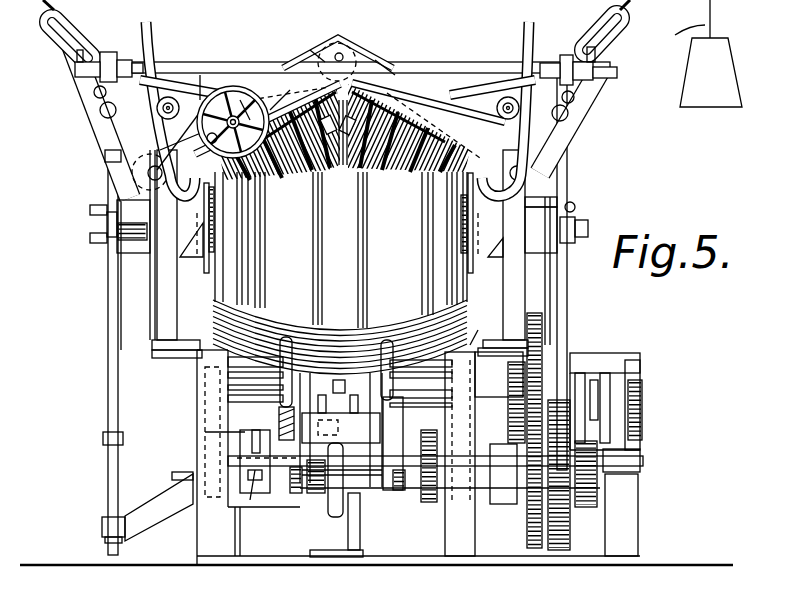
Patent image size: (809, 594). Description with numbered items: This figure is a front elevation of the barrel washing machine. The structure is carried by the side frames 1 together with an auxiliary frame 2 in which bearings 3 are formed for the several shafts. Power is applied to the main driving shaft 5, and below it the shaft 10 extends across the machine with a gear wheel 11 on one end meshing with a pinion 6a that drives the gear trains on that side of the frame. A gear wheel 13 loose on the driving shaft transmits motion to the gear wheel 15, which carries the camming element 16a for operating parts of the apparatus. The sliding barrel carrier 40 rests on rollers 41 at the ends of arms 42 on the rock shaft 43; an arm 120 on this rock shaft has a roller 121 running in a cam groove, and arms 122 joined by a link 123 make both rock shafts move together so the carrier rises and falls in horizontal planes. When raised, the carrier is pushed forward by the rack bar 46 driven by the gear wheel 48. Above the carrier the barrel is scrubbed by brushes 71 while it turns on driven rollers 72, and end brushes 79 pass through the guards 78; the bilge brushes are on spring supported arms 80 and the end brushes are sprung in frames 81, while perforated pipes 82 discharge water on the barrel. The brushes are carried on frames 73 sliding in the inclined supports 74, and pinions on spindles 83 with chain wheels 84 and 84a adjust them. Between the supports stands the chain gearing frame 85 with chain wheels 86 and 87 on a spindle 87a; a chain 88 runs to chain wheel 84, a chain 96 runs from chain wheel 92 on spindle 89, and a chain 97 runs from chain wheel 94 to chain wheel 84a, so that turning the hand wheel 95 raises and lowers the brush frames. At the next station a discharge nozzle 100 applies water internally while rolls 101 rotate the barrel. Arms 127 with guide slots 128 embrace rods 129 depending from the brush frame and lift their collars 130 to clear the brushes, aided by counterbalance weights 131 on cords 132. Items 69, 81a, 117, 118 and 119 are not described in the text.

The side frame 1 is at (376, 457).
The auxiliary frame 2 is at (622, 520).
The bearing 3 is at (615, 462).
The main driving shaft 5 is at (500, 397).
The pinion 6a is at (205, 392).
The shaft 10 is at (237, 458).
The gear wheel 11 is at (205, 432).
The gear wheel 13 is at (555, 345).
The gear wheel 15 is at (530, 525).
The camming element 16a is at (612, 400).
The sliding barrel carrier 40 is at (303, 412).
The roller 41 is at (308, 500).
The arm 42 is at (280, 495).
The rock shaft 43 is at (350, 520).
The arm or bar 46 is at (480, 326).
The gear wheel 48 is at (425, 505).
The arm 69 is at (148, 40).
The brush 71 is at (405, 165).
The driven roller 72 is at (281, 368).
The brush frame 73 is at (48, 40).
The support 74 is at (75, 85).
The guard or side piece 78 is at (204, 275).
The brush 79 is at (215, 230).
The spring supported arm 80 is at (183, 95).
The frame 81 is at (578, 205).
The clamp 81a is at (95, 213).
The perforated pipe 82 is at (342, 160).
The shaft or spindle 83 is at (148, 173).
The chain wheel 84 is at (568, 150).
The chain wheel 84a is at (140, 165).
The frame 85 is at (470, 115).
The chain wheel 86 is at (340, 50).
The chain wheel 87 is at (337, 38).
The shaft or spindle 87a is at (345, 57).
The chain 88 is at (375, 60).
The shaft or spindle 89 is at (238, 95).
The chain wheel 92 is at (240, 100).
The chain wheel 94 is at (200, 75).
The hand wheel 95 is at (270, 110).
The chain 96 is at (317, 48).
The chain 97 is at (205, 195).
The discharge nozzle 100 is at (340, 350).
The roll 101 is at (292, 350).
The gear 117 is at (588, 508).
The gear 118 is at (597, 490).
The collar 119 is at (642, 468).
The arm 120 is at (585, 358).
The roller 121 is at (592, 398).
The arm 122 is at (254, 455).
The link 123 is at (255, 470).
The arm 127 is at (157, 520).
The guide slot 128 is at (103, 527).
The rod or arm 129 is at (108, 372).
The collar 130 is at (103, 438).
The counterbalance weight 131 is at (718, 78).
The cord 132 is at (612, 48).